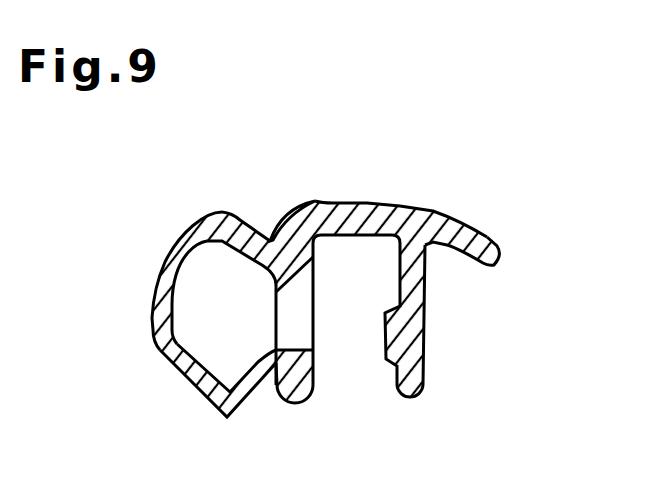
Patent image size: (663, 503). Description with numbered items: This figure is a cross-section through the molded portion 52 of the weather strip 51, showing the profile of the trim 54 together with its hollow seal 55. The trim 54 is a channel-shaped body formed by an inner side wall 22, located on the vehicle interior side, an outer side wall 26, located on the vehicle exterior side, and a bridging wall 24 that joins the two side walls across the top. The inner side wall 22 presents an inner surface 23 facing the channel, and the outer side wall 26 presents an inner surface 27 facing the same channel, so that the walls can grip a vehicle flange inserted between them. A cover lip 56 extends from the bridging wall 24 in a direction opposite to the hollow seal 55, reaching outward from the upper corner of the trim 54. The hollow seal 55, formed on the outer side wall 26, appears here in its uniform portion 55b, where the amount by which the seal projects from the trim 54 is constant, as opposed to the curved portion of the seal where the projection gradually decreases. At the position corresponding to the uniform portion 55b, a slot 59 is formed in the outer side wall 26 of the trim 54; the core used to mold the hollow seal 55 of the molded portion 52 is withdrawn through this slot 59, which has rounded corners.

The weather strip 51 is at (325, 301).
The molded portion 52 is at (309, 201).
The bridging wall 24 is at (371, 203).
The trim 54 is at (415, 206).
The cover lip 56 is at (499, 247).
The hollow seal 55 is at (151, 293).
The uniform portion 55b is at (177, 378).
The slot 59 is at (296, 296).
The outer side wall 26 is at (288, 398).
The inner surface 27 is at (316, 394).
The inner surface 23 is at (391, 387).
The inner side wall 22 is at (423, 387).